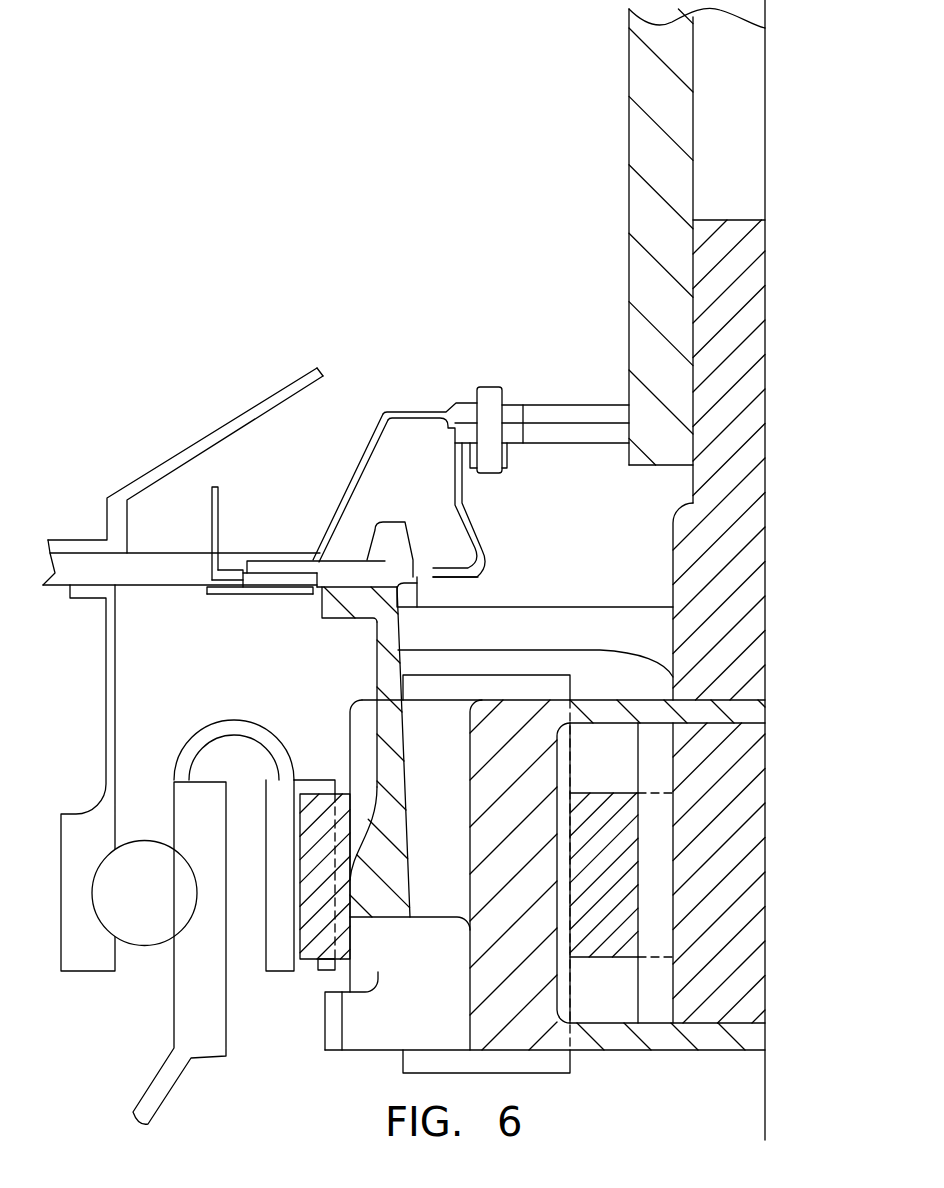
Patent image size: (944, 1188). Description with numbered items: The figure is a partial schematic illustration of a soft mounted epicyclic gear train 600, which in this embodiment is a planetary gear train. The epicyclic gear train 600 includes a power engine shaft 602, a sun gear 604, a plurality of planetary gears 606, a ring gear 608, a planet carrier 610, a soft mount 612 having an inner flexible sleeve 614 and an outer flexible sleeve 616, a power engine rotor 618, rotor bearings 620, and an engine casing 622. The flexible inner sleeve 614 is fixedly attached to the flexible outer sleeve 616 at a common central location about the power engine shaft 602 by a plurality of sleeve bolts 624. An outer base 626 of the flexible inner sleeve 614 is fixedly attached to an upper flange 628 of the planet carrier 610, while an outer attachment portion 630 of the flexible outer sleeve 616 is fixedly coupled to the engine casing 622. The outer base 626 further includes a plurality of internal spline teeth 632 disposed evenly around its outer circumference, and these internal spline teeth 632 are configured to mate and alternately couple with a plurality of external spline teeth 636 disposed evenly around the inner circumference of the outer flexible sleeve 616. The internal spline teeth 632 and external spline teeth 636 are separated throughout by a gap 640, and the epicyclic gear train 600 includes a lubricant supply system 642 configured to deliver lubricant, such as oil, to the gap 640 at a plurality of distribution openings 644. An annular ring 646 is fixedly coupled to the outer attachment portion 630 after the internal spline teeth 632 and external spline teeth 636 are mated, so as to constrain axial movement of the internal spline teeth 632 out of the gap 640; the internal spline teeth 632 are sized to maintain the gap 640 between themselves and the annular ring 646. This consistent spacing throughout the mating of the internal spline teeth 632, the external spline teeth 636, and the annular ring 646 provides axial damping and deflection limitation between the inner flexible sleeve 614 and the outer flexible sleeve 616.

The epicyclic gear train 600 is at (245, 265).
The power engine shaft 602 is at (627, 198).
The sun gear 604 is at (658, 958).
The planetary gears 606 is at (392, 960).
The ring gear 608 is at (321, 967).
The planet carrier 610 is at (377, 667).
The soft mount 612 is at (508, 387).
The inner flexible sleeve 614 is at (468, 580).
The outer flexible sleeve 616 is at (362, 404).
The power engine rotor 618 is at (195, 1062).
The rotor bearings 620 is at (144, 947).
The engine casing 622 is at (104, 683).
The sleeve bolts 624 is at (507, 458).
The outer base 626 is at (372, 530).
The upper flange 628 is at (338, 620).
The outer attachment portion 630 is at (155, 553).
The internal spline teeth 632 is at (347, 508).
The external spline teeth 636 is at (277, 560).
The gap 640 is at (243, 580).
The lubricant supply system 642 is at (223, 503).
The distribution openings 644 is at (245, 575).
The annular ring 646 is at (223, 594).